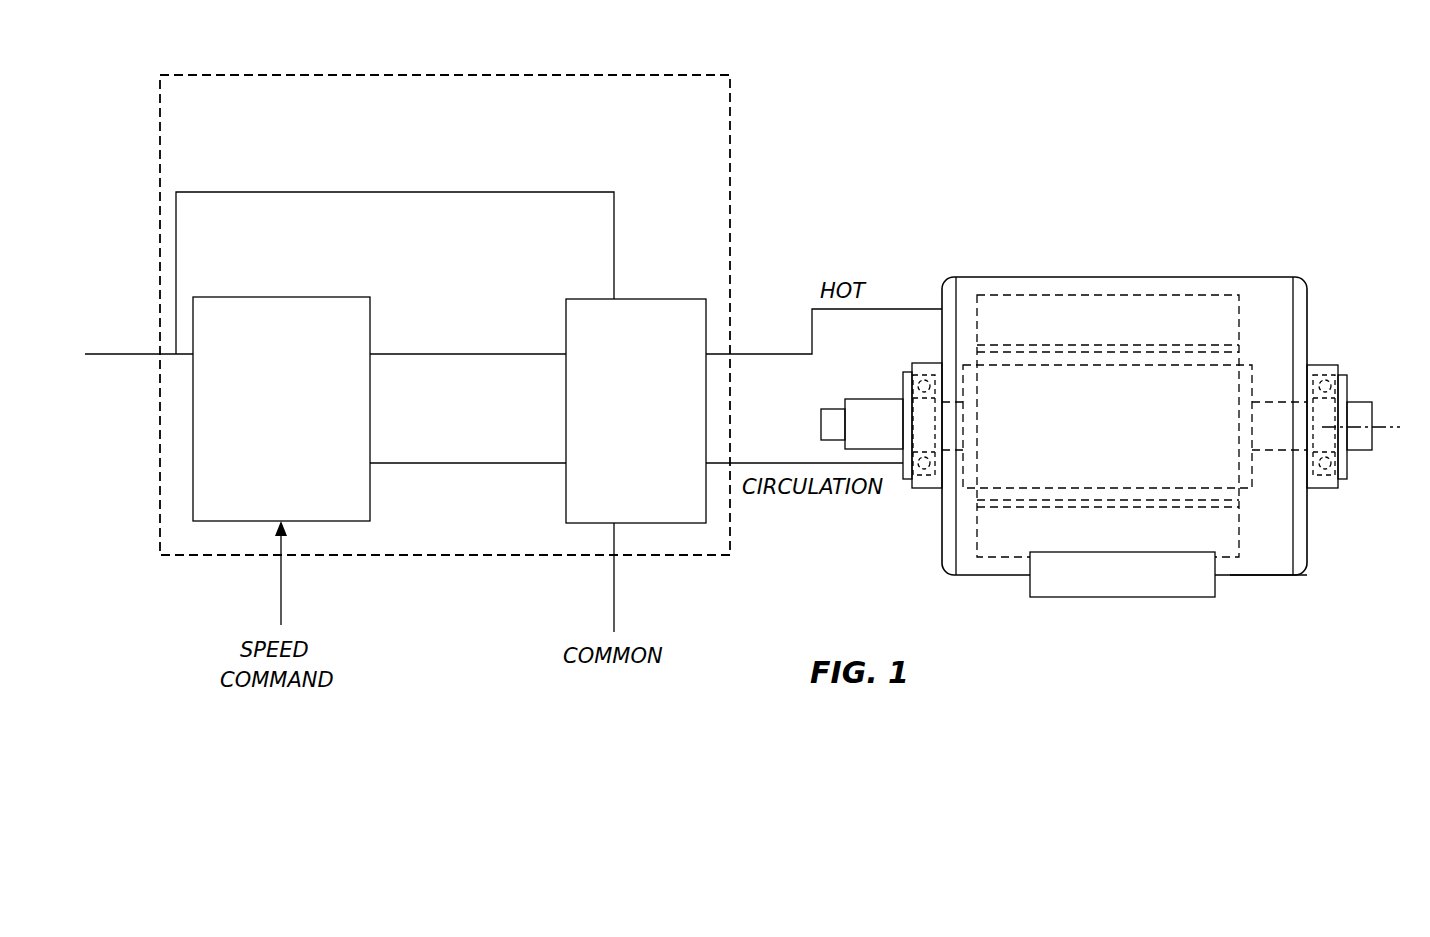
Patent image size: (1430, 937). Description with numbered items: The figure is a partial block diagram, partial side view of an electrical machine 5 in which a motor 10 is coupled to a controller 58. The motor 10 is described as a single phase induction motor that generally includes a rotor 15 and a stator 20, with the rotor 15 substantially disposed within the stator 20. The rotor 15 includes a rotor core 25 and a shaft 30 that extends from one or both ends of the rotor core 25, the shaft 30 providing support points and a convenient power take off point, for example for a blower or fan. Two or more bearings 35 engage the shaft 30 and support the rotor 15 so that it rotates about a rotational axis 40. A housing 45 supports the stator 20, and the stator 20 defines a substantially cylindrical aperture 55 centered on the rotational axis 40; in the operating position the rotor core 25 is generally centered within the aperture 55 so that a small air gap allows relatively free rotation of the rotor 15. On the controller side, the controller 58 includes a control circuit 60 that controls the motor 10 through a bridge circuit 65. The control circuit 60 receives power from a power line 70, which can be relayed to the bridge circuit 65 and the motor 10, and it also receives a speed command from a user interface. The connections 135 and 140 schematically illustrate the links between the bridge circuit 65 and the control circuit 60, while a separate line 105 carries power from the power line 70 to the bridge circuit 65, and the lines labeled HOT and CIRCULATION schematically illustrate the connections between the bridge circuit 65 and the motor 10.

The electrical machine 5 is at (942, 100).
The motor 10 is at (1243, 275).
The rotor 15 is at (1265, 380).
The stator 20 is at (1083, 315).
The rotor core 25 is at (1252, 470).
The shaft 30 is at (1352, 403).
The bearings 35 is at (922, 372).
The rotational axis 40 is at (1385, 436).
The housing 45 is at (1260, 568).
The aperture 55 is at (1092, 495).
The controller 58 is at (437, 73).
The control circuit 60 is at (283, 297).
The bridge circuit 65 is at (635, 298).
The power line 70 is at (134, 356).
The line 105 is at (428, 192).
The connection 135 is at (498, 352).
The connection 140 is at (440, 465).